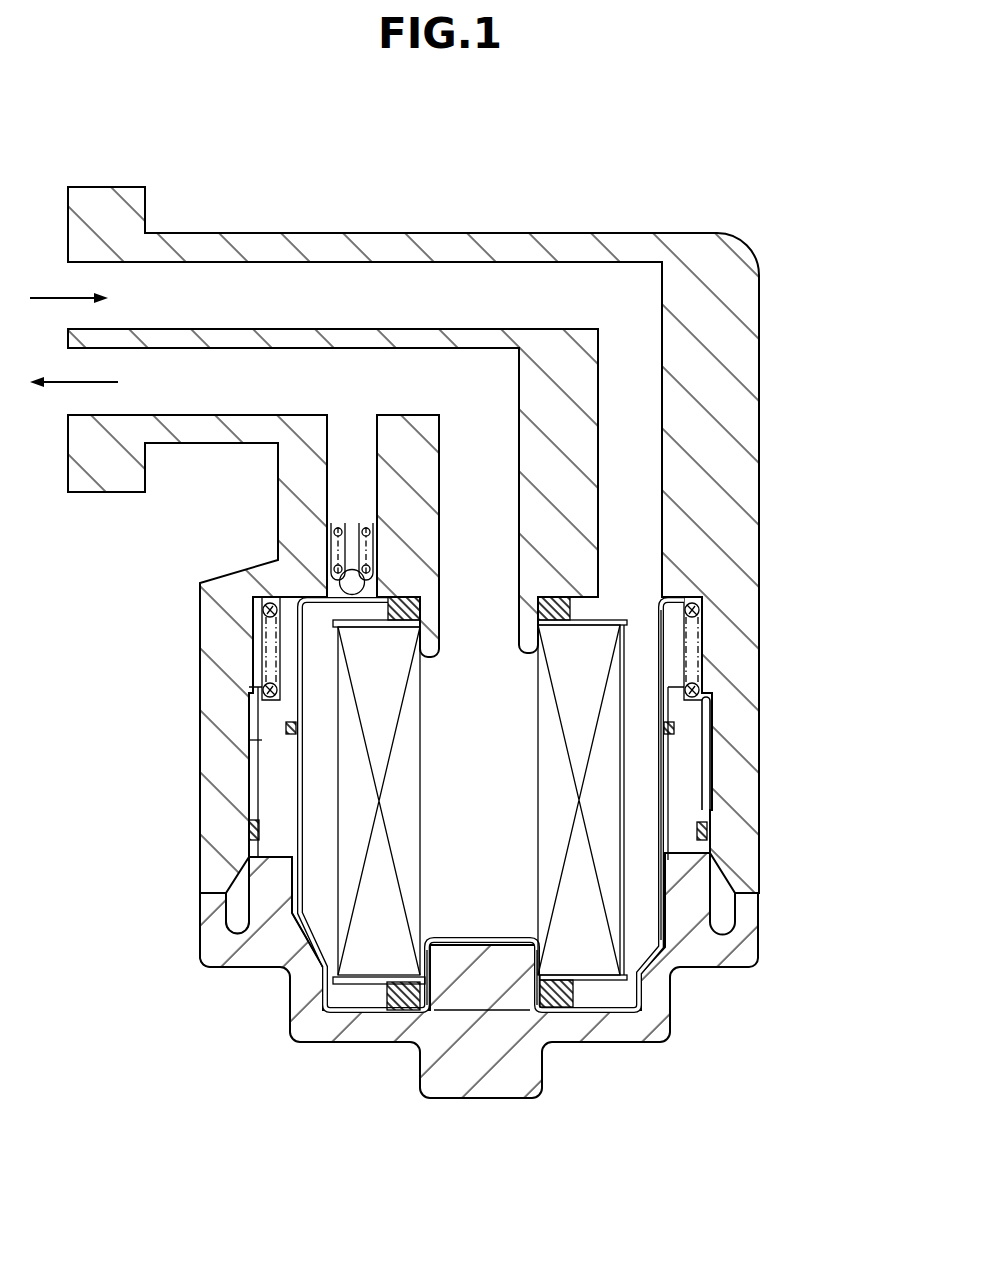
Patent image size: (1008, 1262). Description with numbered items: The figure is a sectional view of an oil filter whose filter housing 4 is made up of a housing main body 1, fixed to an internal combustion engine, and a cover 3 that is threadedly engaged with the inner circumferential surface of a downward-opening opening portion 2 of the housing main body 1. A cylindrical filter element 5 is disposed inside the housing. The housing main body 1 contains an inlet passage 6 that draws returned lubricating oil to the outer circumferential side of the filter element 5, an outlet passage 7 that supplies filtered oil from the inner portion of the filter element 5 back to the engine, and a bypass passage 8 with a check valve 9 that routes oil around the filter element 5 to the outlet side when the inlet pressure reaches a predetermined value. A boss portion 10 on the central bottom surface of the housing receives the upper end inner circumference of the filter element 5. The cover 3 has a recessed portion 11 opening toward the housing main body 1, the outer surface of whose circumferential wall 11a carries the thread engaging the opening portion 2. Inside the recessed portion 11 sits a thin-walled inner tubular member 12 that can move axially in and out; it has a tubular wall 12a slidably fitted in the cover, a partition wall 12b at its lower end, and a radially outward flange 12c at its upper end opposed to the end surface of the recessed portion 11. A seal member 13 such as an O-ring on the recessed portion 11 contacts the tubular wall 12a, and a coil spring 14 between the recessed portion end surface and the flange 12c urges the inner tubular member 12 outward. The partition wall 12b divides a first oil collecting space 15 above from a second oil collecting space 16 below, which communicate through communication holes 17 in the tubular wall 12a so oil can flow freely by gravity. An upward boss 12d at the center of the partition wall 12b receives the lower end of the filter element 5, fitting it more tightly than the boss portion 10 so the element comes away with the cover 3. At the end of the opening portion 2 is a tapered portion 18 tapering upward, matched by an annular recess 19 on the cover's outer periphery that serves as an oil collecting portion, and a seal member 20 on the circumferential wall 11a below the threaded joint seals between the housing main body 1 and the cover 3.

The housing main body 1 is at (724, 598).
The opening portion 2 is at (270, 855).
The cover 3 is at (703, 730).
The filter housing 4 is at (833, 582).
The filter element 5 is at (360, 962).
The inlet passage 6 is at (82, 272).
The outlet passage 7 is at (82, 398).
The bypass passage 8 is at (327, 488).
The check valve 9 is at (347, 575).
The boss portion 10 is at (258, 640).
The recessed portion 11 is at (305, 773).
The circumferential wall 11a is at (263, 735).
The inner tubular member 12 is at (287, 655).
The tubular wall 12a is at (300, 725).
The partition wall 12b is at (408, 965).
The radially outward flange 12c is at (662, 632).
The boss 12d is at (515, 1000).
The seal member 13 is at (290, 727).
The coil spring 14 is at (262, 605).
The first oil collecting space 15 is at (677, 975).
The second oil collecting space 16 is at (458, 1000).
The communication holes 17 is at (307, 907).
The tapered portion 18 is at (222, 897).
The annular recess 19 is at (200, 958).
The seal member 20 is at (253, 832).